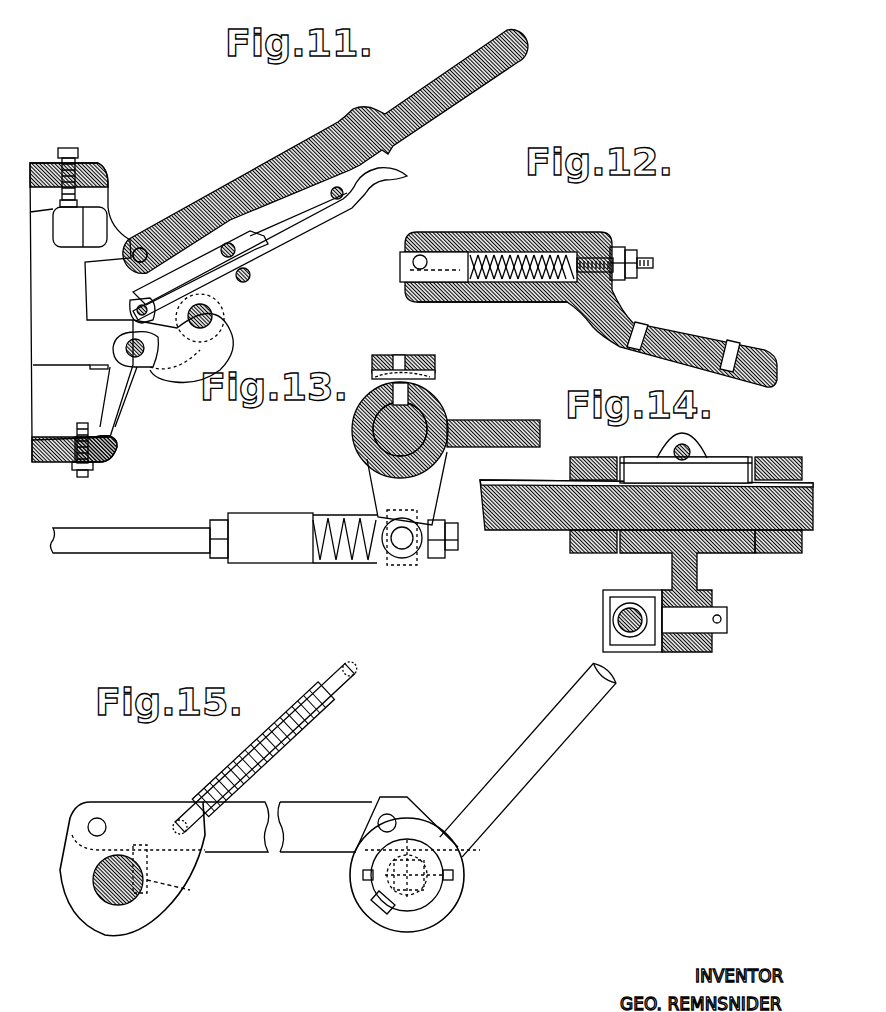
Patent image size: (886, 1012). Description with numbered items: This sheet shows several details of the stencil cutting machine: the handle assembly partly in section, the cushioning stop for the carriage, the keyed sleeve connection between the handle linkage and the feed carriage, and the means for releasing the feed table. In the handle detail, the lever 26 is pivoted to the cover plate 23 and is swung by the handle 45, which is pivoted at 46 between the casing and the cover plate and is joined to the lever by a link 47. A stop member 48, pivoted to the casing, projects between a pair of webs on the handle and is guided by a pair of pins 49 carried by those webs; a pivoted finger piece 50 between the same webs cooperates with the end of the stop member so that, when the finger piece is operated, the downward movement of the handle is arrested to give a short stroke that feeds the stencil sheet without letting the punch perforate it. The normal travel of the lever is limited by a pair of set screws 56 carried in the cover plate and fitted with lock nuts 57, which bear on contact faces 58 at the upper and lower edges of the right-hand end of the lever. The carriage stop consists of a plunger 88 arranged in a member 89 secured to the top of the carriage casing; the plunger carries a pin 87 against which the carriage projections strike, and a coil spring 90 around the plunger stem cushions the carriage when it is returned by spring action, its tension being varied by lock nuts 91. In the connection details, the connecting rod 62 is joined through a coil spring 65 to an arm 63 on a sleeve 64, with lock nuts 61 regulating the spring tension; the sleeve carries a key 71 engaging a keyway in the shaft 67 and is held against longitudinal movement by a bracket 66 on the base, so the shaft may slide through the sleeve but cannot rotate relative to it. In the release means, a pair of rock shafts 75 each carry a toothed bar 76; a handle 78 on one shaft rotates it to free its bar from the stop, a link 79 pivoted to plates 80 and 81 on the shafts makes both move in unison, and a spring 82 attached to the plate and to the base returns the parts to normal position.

In FIG. 11, the cover plate 23 is at (43, 455).
In FIG. 11, the lever 26 is at (81, 312).
In FIG. 11, the handle 45 is at (445, 73).
In FIG. 11, the pivot 46 is at (142, 248).
In FIG. 11, the link 47 is at (178, 370).
In FIG. 11, the stop member 48 is at (211, 255).
In FIG. 11, the pins 49 is at (237, 258).
In FIG. 11, the finger piece 50 is at (305, 205).
In FIG. 11, the set screws 56 is at (98, 174).
In FIG. 11, the lock nuts 57 is at (80, 155).
In FIG. 11, the contact faces 58 is at (66, 212).
In FIG. 13, the lock nuts 61 is at (447, 555).
In FIG. 13, the connecting rod 62 is at (175, 545).
In FIG. 14, the connecting rod 62 is at (620, 618).
In FIG. 13, the arm 63 is at (402, 519).
In FIG. 14, the arm 63 is at (686, 648).
In FIG. 13, the sleeve 64 is at (352, 430).
In FIG. 14, the sleeve 64 is at (718, 545).
In FIG. 13, the coil spring 65 is at (357, 565).
In FIG. 14, the coil spring 65 is at (637, 637).
In FIG. 13, the bracket 66 is at (490, 418).
In FIG. 14, the bracket 66 is at (765, 460).
In FIG. 13, the shaft 67 is at (355, 447).
In FIG. 14, the shaft 67 is at (535, 510).
In FIG. 13, the key 71 is at (432, 372).
In FIG. 14, the key 71 is at (710, 468).
In FIG. 15, the rock shafts 75 is at (100, 900).
In FIG. 15, the bar 76 is at (323, 875).
In FIG. 15, the handle 78 is at (520, 758).
In FIG. 15, the link 79 is at (287, 827).
In FIG. 15, the plate 80 is at (420, 825).
In FIG. 15, the plate 81 is at (132, 869).
In FIG. 15, the spring 82 is at (275, 735).
In FIG. 12, the pin 87 is at (414, 264).
In FIG. 12, the plunger 88 is at (445, 258).
In FIG. 12, the member 89 is at (530, 235).
In FIG. 12, the coil spring 90 is at (530, 296).
In FIG. 12, the lock nuts 91 is at (622, 245).